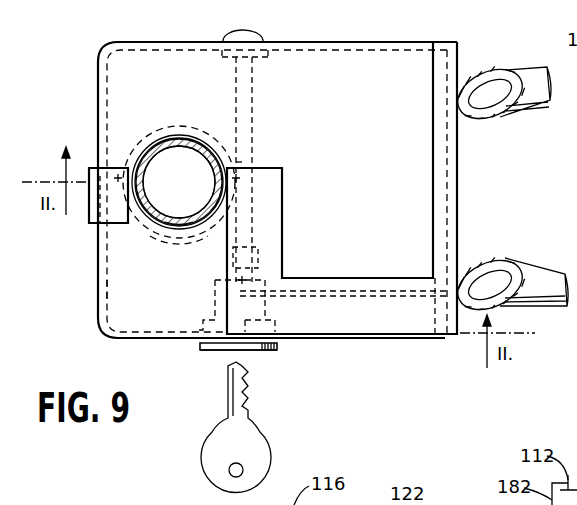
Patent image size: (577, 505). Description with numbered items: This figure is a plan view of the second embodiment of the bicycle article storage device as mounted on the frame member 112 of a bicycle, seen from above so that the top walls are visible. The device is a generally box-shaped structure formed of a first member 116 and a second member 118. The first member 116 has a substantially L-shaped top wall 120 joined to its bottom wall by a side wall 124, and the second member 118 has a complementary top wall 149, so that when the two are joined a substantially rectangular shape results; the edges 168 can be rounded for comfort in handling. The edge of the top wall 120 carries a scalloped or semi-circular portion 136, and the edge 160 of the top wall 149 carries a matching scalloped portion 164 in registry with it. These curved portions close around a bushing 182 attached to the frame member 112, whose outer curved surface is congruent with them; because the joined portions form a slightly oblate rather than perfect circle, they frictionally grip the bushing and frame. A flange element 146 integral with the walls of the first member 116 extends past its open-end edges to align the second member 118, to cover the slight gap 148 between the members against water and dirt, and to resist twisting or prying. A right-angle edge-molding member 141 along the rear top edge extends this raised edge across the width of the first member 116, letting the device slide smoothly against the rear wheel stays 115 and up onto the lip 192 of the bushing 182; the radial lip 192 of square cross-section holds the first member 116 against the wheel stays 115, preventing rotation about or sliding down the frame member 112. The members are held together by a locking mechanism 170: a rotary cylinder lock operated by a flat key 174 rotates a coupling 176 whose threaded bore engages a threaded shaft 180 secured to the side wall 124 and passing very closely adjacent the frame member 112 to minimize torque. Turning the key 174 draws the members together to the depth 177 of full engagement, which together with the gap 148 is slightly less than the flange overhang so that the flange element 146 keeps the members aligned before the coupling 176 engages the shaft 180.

The frame member 112 is at (145, 170).
The rear wheel stays 115 is at (525, 73).
The first member 116 is at (378, 37).
The second member 118 is at (190, 350).
The top wall 120 is at (290, 58).
The side wall 124 is at (98, 78).
The scalloped or semi-circular portion 136 is at (198, 140).
The right-angle edge-molding member 141 is at (447, 178).
The flange element 146 is at (90, 212).
The gap 148 is at (98, 168).
The top wall 149 is at (124, 292).
The edge 160 is at (408, 294).
The scalloped or semi-circular portion 164 is at (190, 228).
The edges 168 is at (104, 46).
The locking mechanism 170 is at (258, 352).
The key 174 is at (255, 445).
The coupling 176 is at (257, 274).
The depth of full engagement 177 is at (250, 261).
The threaded shaft 180 is at (247, 153).
The bushing 182 is at (156, 238).
The lip 192 is at (140, 136).